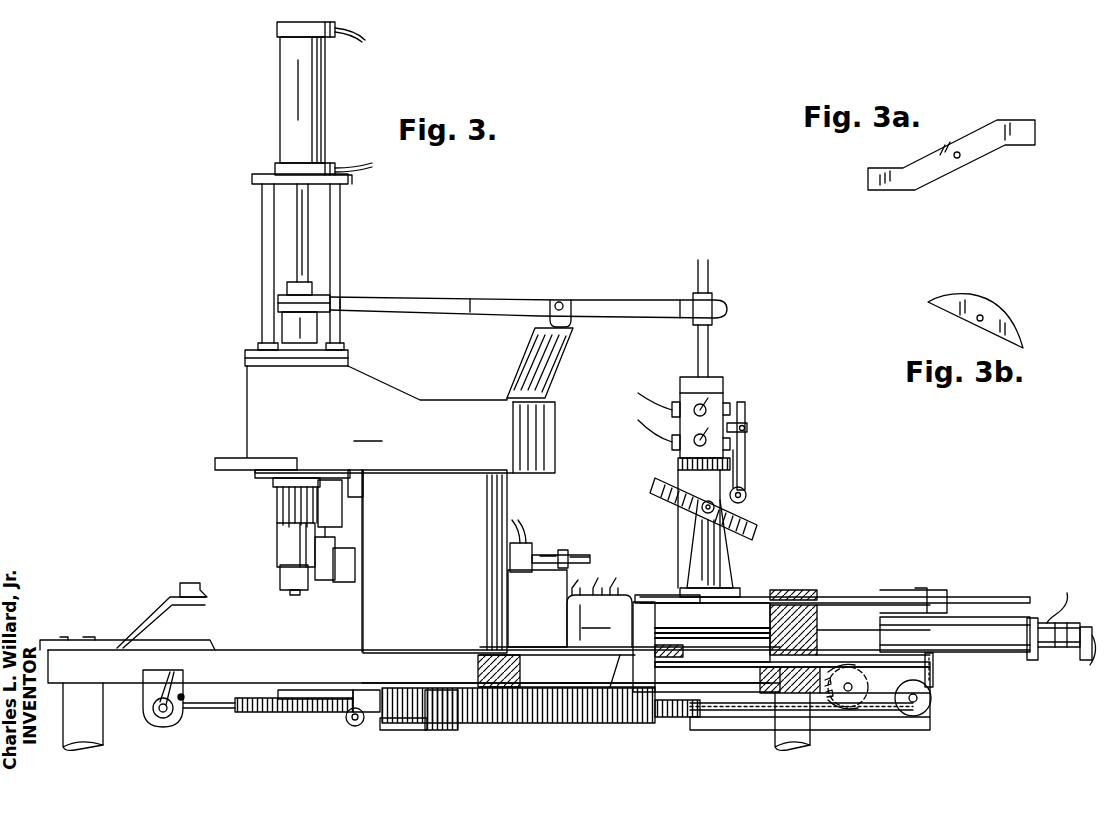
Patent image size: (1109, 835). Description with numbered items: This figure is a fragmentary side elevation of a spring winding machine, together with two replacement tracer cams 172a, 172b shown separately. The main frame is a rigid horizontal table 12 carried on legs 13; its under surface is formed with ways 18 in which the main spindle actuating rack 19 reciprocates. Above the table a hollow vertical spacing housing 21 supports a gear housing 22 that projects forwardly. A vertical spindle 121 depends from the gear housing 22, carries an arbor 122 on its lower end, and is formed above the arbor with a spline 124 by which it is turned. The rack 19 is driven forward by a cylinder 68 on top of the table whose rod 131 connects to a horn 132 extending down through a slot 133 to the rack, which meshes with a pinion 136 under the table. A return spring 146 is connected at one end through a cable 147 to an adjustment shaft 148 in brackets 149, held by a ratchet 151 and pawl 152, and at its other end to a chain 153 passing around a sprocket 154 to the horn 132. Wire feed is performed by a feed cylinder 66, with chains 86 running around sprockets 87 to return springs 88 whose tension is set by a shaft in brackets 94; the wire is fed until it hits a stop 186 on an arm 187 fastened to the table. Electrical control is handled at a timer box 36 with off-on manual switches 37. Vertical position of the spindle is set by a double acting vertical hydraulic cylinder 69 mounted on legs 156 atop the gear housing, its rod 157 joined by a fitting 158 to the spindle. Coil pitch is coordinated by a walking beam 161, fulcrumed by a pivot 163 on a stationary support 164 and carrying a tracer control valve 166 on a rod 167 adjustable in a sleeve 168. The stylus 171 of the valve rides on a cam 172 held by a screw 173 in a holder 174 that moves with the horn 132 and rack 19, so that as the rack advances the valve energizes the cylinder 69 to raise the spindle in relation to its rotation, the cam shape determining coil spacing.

In FIG. 3, the table 12 is at (305, 655).
In FIG. 3, the legs 13 is at (100, 735).
In FIG. 3, the ways 18 is at (707, 732).
In FIG. 3, the main spindle actuating rack 19 is at (600, 715).
In FIG. 3, the spacing housing 21 is at (488, 514).
In FIG. 3, the gear housing 22 is at (385, 411).
In FIG. 3, the timer box 36 is at (570, 583).
In FIG. 3, the off-on manual switch 37 is at (598, 583).
In FIG. 3, the feed cylinder 66 is at (1060, 650).
In FIG. 3, the cylinder 68 is at (1005, 645).
In FIG. 3, the vertical hydraulic cylinder 69 is at (322, 97).
In FIG. 3, the chains 86 is at (933, 670).
In FIG. 3, the sprockets 87 is at (925, 705).
In FIG. 3, the springs 88 is at (737, 715).
In FIG. 3, the brackets 94 is at (353, 727).
In FIG. 3, the vertical spindle 121 is at (282, 548).
In FIG. 3, the arbor 122 is at (299, 592).
In FIG. 3, the spline 124 is at (280, 505).
In FIG. 3, the rod 131 is at (718, 632).
In FIG. 3, the horn 132 is at (638, 676).
In FIG. 3, the slot 133 is at (629, 667).
In FIG. 3, the pinion 136 is at (440, 730).
In FIG. 3, the spring 146 is at (262, 714).
In FIG. 3, the cable 147 is at (219, 710).
In FIG. 3, the adjustment shaft 148 is at (163, 712).
In FIG. 3, the brackets 149 is at (150, 680).
In FIG. 3, the ratchet 151 is at (170, 677).
In FIG. 3, the pawl 152 is at (185, 695).
In FIG. 3, the chain 153 is at (792, 677).
In FIG. 3, the sprocket 154 is at (855, 706).
In FIG. 3, the legs 156 is at (340, 225).
In FIG. 3, the rod 157 is at (306, 262).
In FIG. 3, the fitting 158 is at (314, 290).
In FIG. 3, the walking beam 161 is at (624, 300).
In FIG. 3, the pivot 163 is at (560, 297).
In FIG. 3, the stationary support 164 is at (575, 327).
In FIG. 3, the tracer control valve 166 is at (716, 390).
In FIG. 3, the rod 167 is at (708, 340).
In FIG. 3, the sleeve 168 is at (712, 300).
In FIG. 3, the stylus 171 is at (747, 446).
In FIG. 3, the cam 172 is at (752, 513).
In FIG. 3A, the cam 172a is at (975, 152).
In FIG. 3B, the cam 172b is at (1012, 325).
In FIG. 3, the screw 173 is at (700, 508).
In FIG. 3, the holder 174 is at (724, 571).
In FIG. 3, the stop 186 is at (185, 583).
In FIG. 3, the arm 187 is at (135, 620).